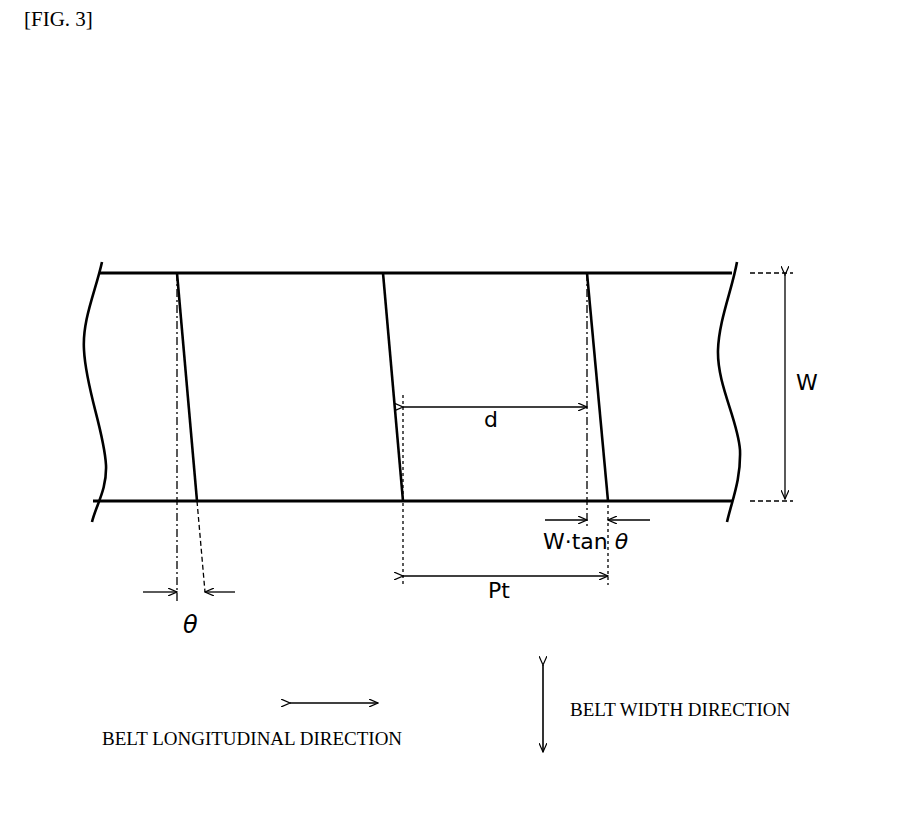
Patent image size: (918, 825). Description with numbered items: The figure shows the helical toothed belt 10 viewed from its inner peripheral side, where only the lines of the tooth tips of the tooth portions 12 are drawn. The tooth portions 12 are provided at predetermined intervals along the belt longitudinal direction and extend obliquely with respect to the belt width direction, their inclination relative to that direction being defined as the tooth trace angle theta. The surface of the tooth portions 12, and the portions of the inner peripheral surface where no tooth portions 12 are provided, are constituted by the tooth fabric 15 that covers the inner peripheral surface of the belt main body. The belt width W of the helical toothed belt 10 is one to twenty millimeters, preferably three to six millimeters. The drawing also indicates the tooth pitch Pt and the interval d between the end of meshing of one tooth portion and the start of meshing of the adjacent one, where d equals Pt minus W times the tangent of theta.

The helical toothed belt 10 is at (148, 177).
The tooth portions 12 is at (182, 298).
The tooth fabric 15 is at (283, 318).